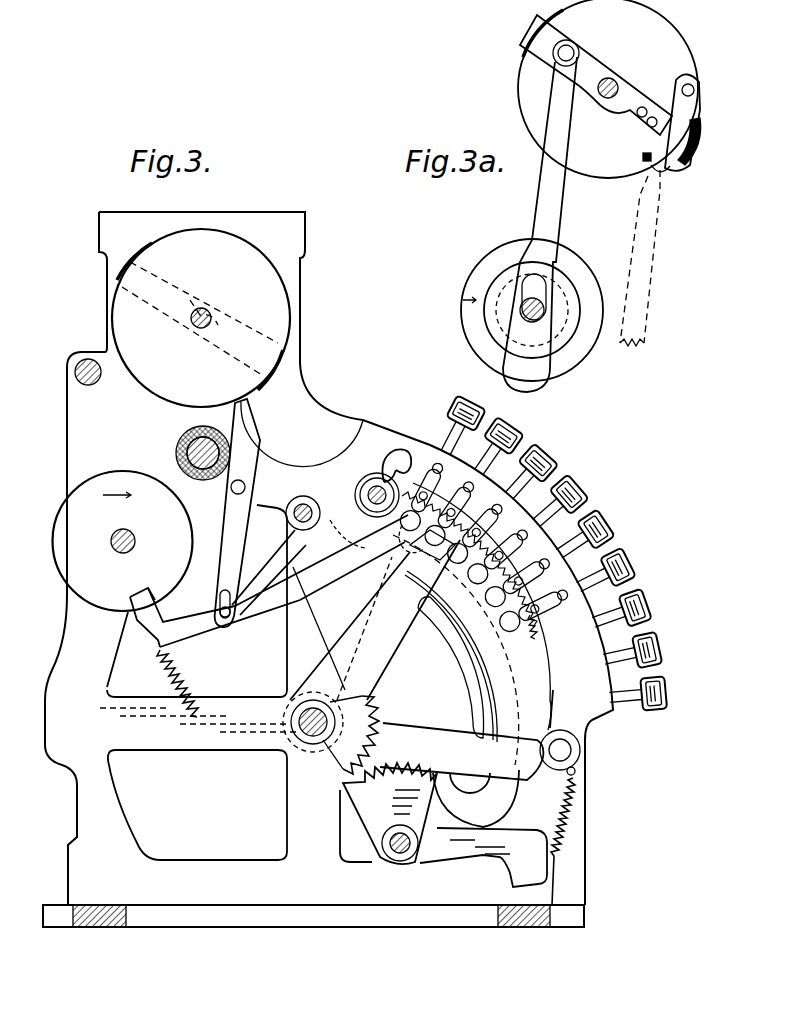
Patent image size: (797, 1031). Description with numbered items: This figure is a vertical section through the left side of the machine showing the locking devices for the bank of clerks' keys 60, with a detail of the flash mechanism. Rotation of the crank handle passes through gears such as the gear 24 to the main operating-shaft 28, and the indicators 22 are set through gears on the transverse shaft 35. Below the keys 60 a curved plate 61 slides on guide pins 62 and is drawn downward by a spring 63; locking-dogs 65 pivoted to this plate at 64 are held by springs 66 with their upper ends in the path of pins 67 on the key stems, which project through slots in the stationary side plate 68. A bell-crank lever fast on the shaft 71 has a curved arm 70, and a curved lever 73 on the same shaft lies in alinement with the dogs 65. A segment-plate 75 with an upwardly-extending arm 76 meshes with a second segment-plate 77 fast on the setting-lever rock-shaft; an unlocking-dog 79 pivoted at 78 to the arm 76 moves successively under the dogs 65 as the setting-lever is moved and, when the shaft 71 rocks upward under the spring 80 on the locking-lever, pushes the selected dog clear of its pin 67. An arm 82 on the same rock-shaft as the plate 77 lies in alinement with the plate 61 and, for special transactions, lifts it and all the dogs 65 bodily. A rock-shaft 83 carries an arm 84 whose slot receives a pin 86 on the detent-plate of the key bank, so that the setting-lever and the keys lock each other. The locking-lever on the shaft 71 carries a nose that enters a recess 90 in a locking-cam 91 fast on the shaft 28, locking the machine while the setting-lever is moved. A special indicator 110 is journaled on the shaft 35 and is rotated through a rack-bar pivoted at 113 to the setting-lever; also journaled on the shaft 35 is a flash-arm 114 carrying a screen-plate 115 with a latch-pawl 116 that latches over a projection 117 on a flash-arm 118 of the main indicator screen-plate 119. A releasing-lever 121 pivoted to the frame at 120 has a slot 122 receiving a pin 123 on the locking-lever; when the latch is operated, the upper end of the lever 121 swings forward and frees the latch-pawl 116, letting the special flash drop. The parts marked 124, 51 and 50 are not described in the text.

In FIG. 3, the special indicator 110 is at (212, 394).
In FIG. 3, the transverse shaft 35 is at (200, 361).
In FIG. 3A, the transverse shaft 35 is at (614, 82).
In FIG. 3, the flash-arm 114 is at (228, 282).
In FIG. 3, the screen-plate 115 is at (115, 281).
In FIG. 3A, the screen-plate 115 is at (698, 118).
In FIG. 3, the cam slot 124 is at (320, 448).
In FIG. 3, the bearing ring 51 is at (180, 442).
In FIG. 3, the shaft 50 is at (180, 458).
In FIG. 3, the pivot 120 is at (246, 487).
In FIG. 3, the pin 123 is at (219, 604).
In FIG. 3, the slot 122 is at (231, 615).
In FIG. 3, the main operating-shaft 28 is at (122, 528).
In FIG. 3A, the main operating-shaft 28 is at (540, 300).
In FIG. 3, the locking-cam 91 is at (115, 579).
In FIG. 3, the recess 90 is at (131, 598).
In FIG. 3, the rock-shaft 83 is at (140, 628).
In FIG. 3, the arm 84 is at (305, 580).
In FIG. 3, the spring 80 is at (178, 684).
In FIG. 3, the spring 63 is at (292, 522).
In FIG. 3, the shaft 71 is at (368, 487).
In FIG. 3, the pins 62 is at (394, 449).
In FIG. 3, the locking-dogs 65 is at (437, 462).
In FIG. 3, the springs 66 is at (478, 510).
In FIG. 3, the pins 67 is at (462, 478).
In FIG. 3, the push-keys 60 is at (548, 445).
In FIG. 3, the gear 24 is at (668, 680).
In FIG. 3, the stationary side plate 68 is at (485, 606).
In FIG. 3, the pivot 64 is at (463, 650).
In FIG. 3, the curved lever 73 is at (473, 660).
In FIG. 3, the curved plate 61 is at (455, 634).
In FIG. 3, the arm 76 is at (404, 683).
In FIG. 3, the pivot 78 is at (455, 575).
In FIG. 3, the unlocking-dog 79 is at (413, 553).
In FIG. 3, the pin 86 is at (372, 540).
In FIG. 3, the curved arm 70 is at (525, 560).
In FIG. 3, the segment-plate 75 is at (351, 735).
In FIG. 3, the segment-plate 77 is at (390, 813).
In FIG. 3, the projection 117 is at (402, 860).
In FIG. 3A, the projection 117 is at (642, 120).
In FIG. 3, the arm 82 is at (515, 874).
In FIG. 3A, the main indicator screen-plate 119 is at (525, 30).
In FIG. 3A, the flash-arm 118 is at (584, 64).
In FIG. 3A, the indicators 22 is at (584, 211).
In FIG. 3A, the pivot 113 is at (692, 140).
In FIG. 3A, the latch-pawl 116 is at (673, 140).
In FIG. 3A, the releasing-lever 121 is at (652, 272).